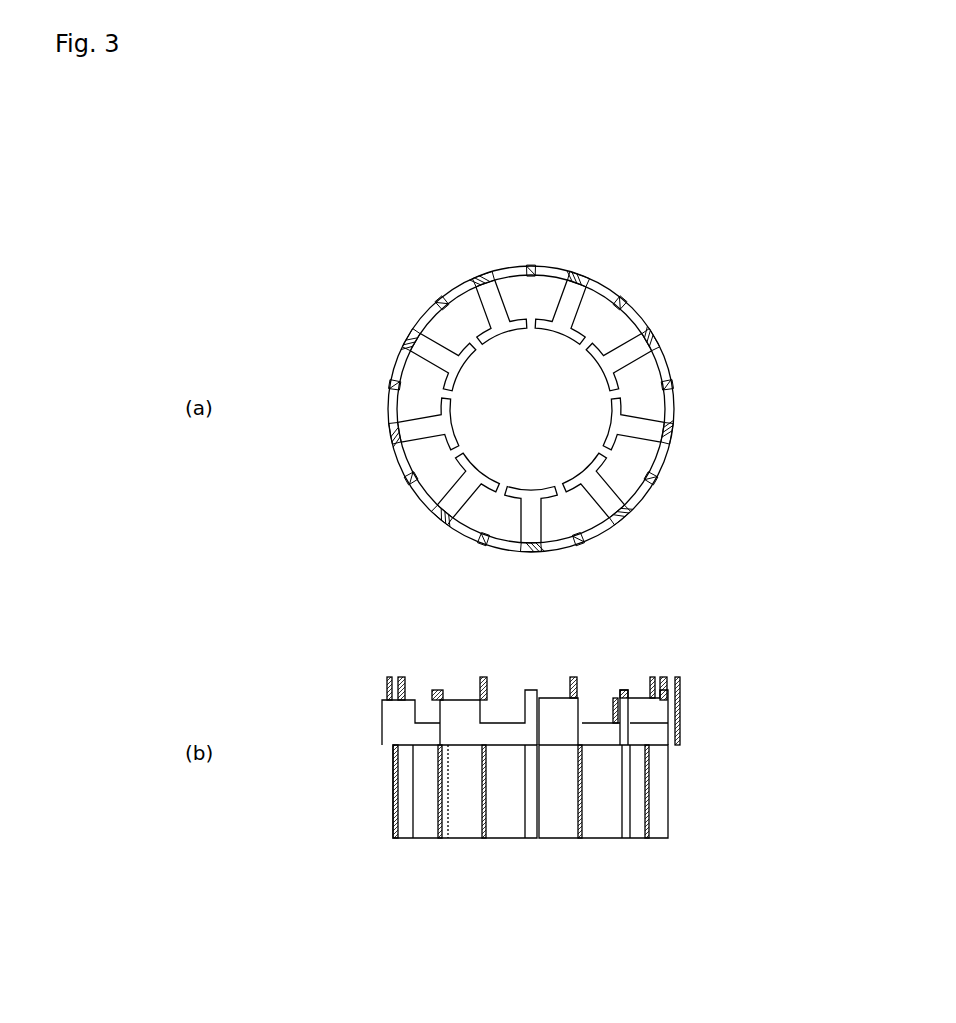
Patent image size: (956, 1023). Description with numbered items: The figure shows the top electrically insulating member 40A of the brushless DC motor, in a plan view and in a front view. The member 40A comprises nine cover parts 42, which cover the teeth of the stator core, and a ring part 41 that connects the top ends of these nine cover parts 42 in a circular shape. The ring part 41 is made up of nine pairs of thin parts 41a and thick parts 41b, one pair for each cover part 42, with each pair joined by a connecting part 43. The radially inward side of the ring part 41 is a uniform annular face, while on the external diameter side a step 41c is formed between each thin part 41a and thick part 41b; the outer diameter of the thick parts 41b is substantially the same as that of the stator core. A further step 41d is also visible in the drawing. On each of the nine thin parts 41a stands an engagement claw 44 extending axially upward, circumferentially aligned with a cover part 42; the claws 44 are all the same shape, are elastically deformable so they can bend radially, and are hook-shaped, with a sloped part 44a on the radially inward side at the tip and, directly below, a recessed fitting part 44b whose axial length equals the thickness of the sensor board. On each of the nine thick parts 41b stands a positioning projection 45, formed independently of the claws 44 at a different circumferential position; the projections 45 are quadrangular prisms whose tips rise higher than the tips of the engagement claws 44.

The top electrically insulating member 40A is at (652, 296).
The ring part 41 is at (415, 312).
The thin part 41a is at (388, 410).
The thick part 41b is at (402, 362).
The step 41c is at (628, 522).
The side face 41d is at (657, 484).
The cover part 42 is at (668, 352).
The connecting part 43 is at (672, 378).
The engagement claw 44 is at (478, 278).
The sloped part 44a is at (655, 698).
The recessed fitting part 44b is at (681, 705).
The positioning projection 45 is at (440, 297).